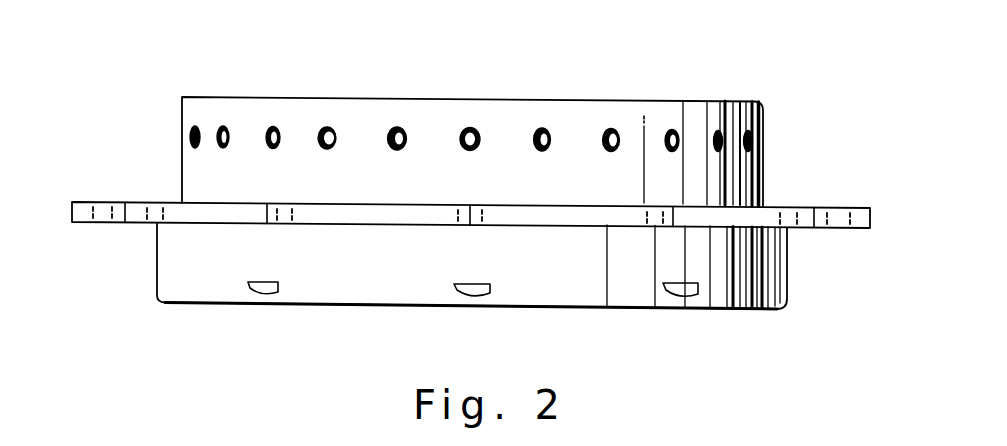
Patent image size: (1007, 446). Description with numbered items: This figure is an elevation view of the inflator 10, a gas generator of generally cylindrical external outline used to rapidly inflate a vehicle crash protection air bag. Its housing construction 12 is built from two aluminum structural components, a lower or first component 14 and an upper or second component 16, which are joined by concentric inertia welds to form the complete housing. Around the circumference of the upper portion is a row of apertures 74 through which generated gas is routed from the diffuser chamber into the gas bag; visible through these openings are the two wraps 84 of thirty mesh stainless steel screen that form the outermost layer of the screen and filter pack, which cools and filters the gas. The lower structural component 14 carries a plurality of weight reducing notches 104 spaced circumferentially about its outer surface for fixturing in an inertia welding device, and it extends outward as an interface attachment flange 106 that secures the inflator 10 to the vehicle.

The inflator 10 is at (495, 175).
The housing construction 12 is at (528, 137).
The lower structural component 14 is at (489, 281).
The upper structural component 16 is at (750, 166).
The apertures 74 is at (329, 133).
The wraps of 30 mesh stainless steel screen 84 is at (616, 130).
The weight reducing notches 104 is at (468, 293).
The interface attachment flange 106 is at (860, 217).